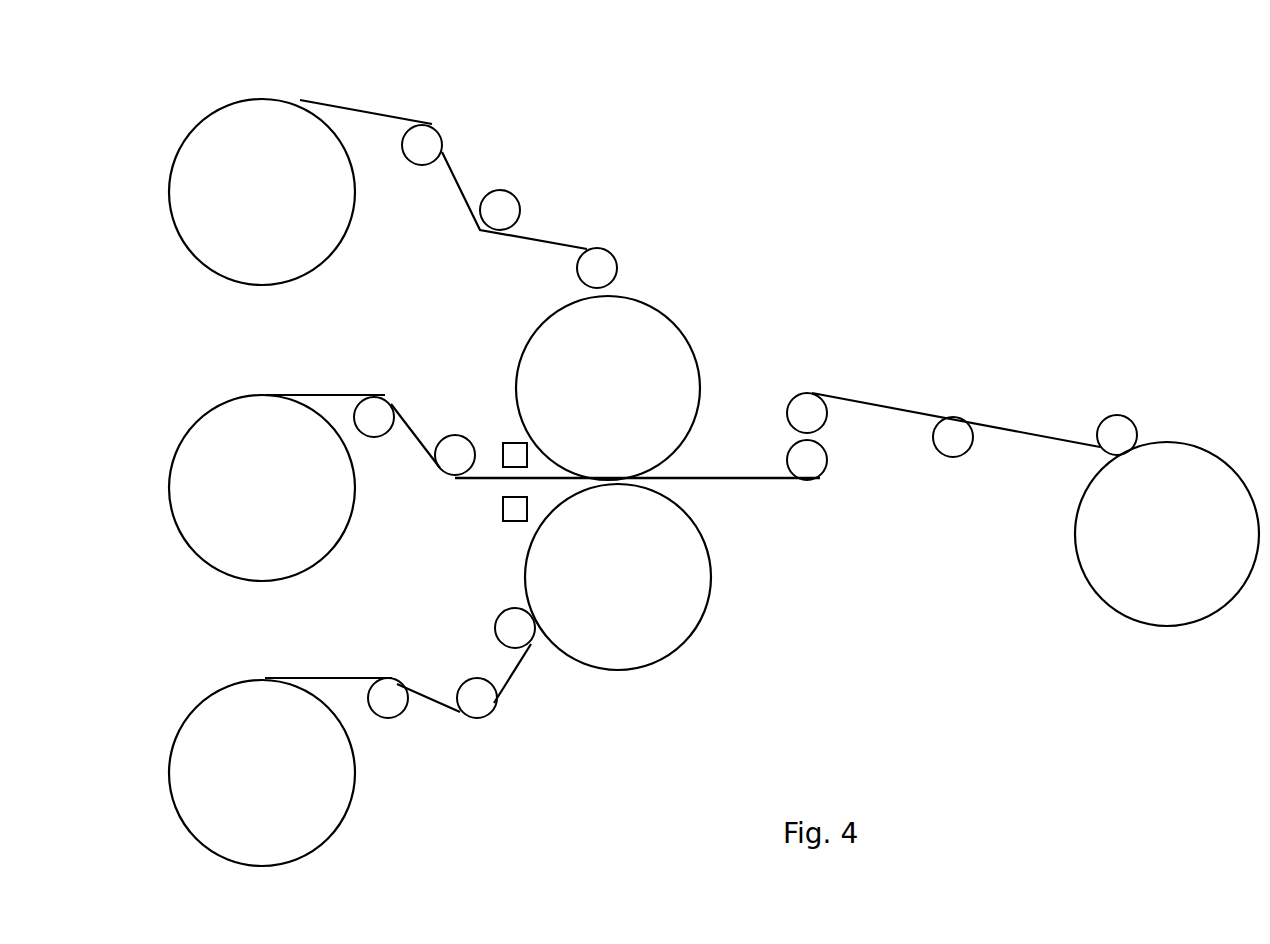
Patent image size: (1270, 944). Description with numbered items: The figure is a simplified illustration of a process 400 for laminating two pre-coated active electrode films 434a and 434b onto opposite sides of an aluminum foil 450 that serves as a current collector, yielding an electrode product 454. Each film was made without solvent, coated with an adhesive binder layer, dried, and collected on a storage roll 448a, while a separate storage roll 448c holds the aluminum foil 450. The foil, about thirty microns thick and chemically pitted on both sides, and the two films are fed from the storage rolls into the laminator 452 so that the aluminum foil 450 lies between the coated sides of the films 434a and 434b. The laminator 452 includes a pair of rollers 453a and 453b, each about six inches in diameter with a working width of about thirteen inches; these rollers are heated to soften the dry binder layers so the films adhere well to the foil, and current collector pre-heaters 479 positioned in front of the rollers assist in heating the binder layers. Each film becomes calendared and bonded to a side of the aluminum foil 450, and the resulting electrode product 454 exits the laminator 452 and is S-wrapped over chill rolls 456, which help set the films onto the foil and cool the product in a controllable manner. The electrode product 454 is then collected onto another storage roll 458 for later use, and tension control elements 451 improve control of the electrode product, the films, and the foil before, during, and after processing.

The process 400 is at (753, 105).
The active electrode film 434a is at (317, 678).
The active electrode film 434b is at (382, 118).
The storage roll 448a is at (262, 482).
The storage roll 448c is at (262, 488).
The aluminum foil 450 is at (327, 393).
The tension control element 451 is at (950, 457).
The laminator 452 is at (685, 272).
The roller 453a is at (618, 577).
The roller 453b is at (608, 388).
The electrode product 454 is at (928, 409).
The chill rolls 456 is at (830, 461).
The storage roll 458 is at (1167, 520).
The current collector pre-heater 479 is at (503, 510).